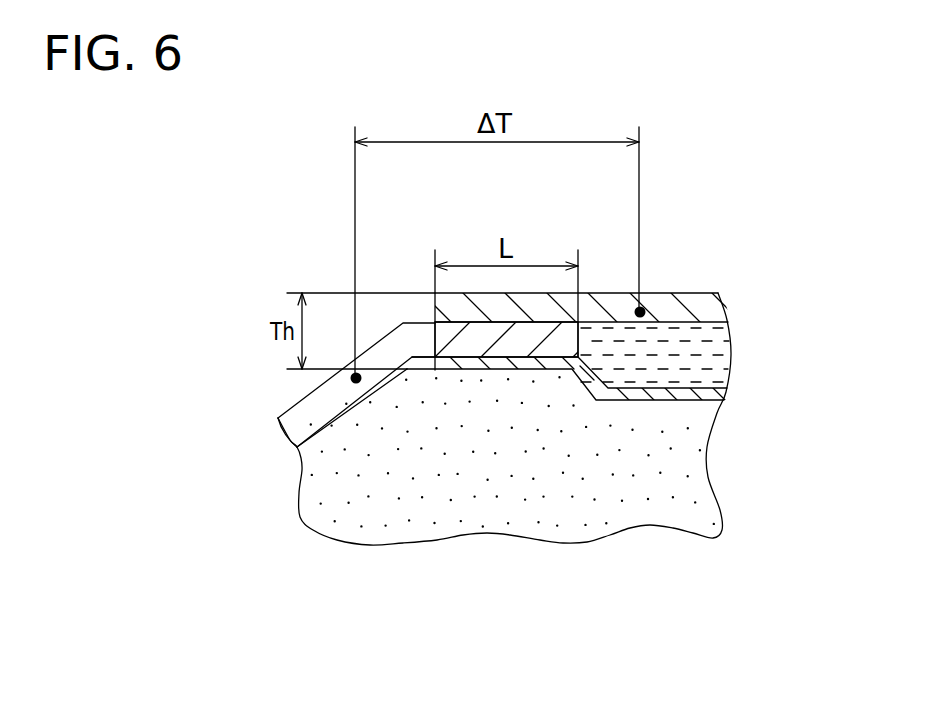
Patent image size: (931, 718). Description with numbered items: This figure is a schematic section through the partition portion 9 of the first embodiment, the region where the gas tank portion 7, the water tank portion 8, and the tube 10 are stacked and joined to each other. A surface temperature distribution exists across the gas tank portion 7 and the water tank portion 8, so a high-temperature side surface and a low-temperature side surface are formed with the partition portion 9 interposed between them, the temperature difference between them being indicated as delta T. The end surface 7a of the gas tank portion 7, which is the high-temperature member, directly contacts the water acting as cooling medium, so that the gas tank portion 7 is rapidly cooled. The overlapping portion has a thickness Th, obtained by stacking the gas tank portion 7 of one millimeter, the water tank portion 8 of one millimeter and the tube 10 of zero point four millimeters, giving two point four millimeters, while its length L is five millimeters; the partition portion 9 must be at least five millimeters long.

The gas tank portion 7 is at (325, 398).
The end surface of the gas tank portion 7a is at (580, 338).
The water tank portion 8 is at (687, 302).
The partition portion 9 is at (525, 358).
The tube 10 is at (712, 416).